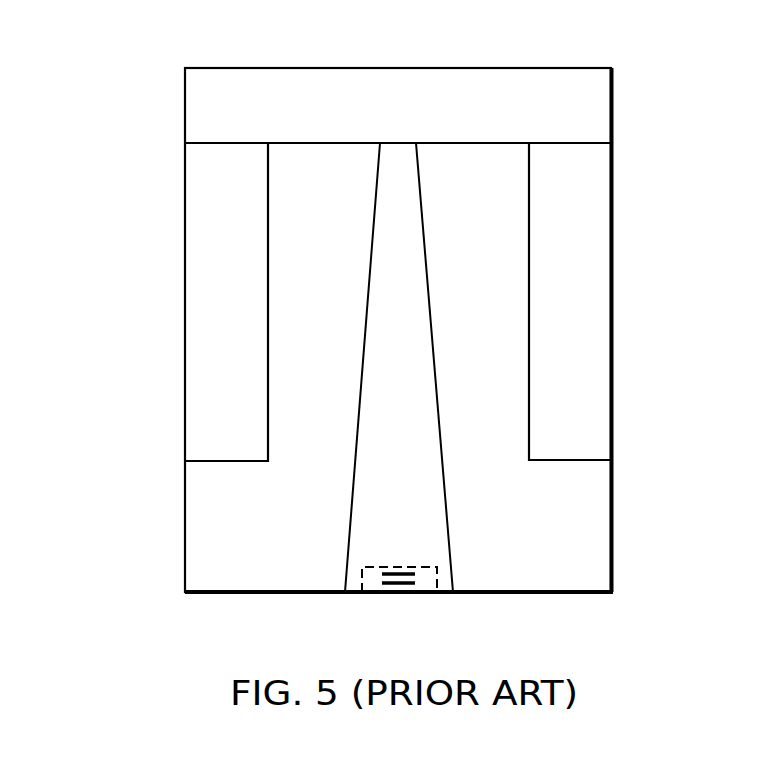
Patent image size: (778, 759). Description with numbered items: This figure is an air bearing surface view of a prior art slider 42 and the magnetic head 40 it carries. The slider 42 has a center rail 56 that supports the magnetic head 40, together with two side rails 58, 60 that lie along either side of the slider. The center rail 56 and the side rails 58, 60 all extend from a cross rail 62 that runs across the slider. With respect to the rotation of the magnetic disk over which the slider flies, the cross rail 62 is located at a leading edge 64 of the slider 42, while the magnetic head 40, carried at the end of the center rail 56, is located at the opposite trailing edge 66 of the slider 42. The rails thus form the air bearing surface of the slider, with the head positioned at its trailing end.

The magnetic head 40 is at (373, 598).
The slider 42 is at (162, 540).
The center rail 56 is at (384, 250).
The side rail 58 is at (197, 213).
The side rail 60 is at (587, 211).
The cross rail 62 is at (313, 76).
The leading edge 64 is at (463, 70).
The trailing edge 66 is at (510, 595).